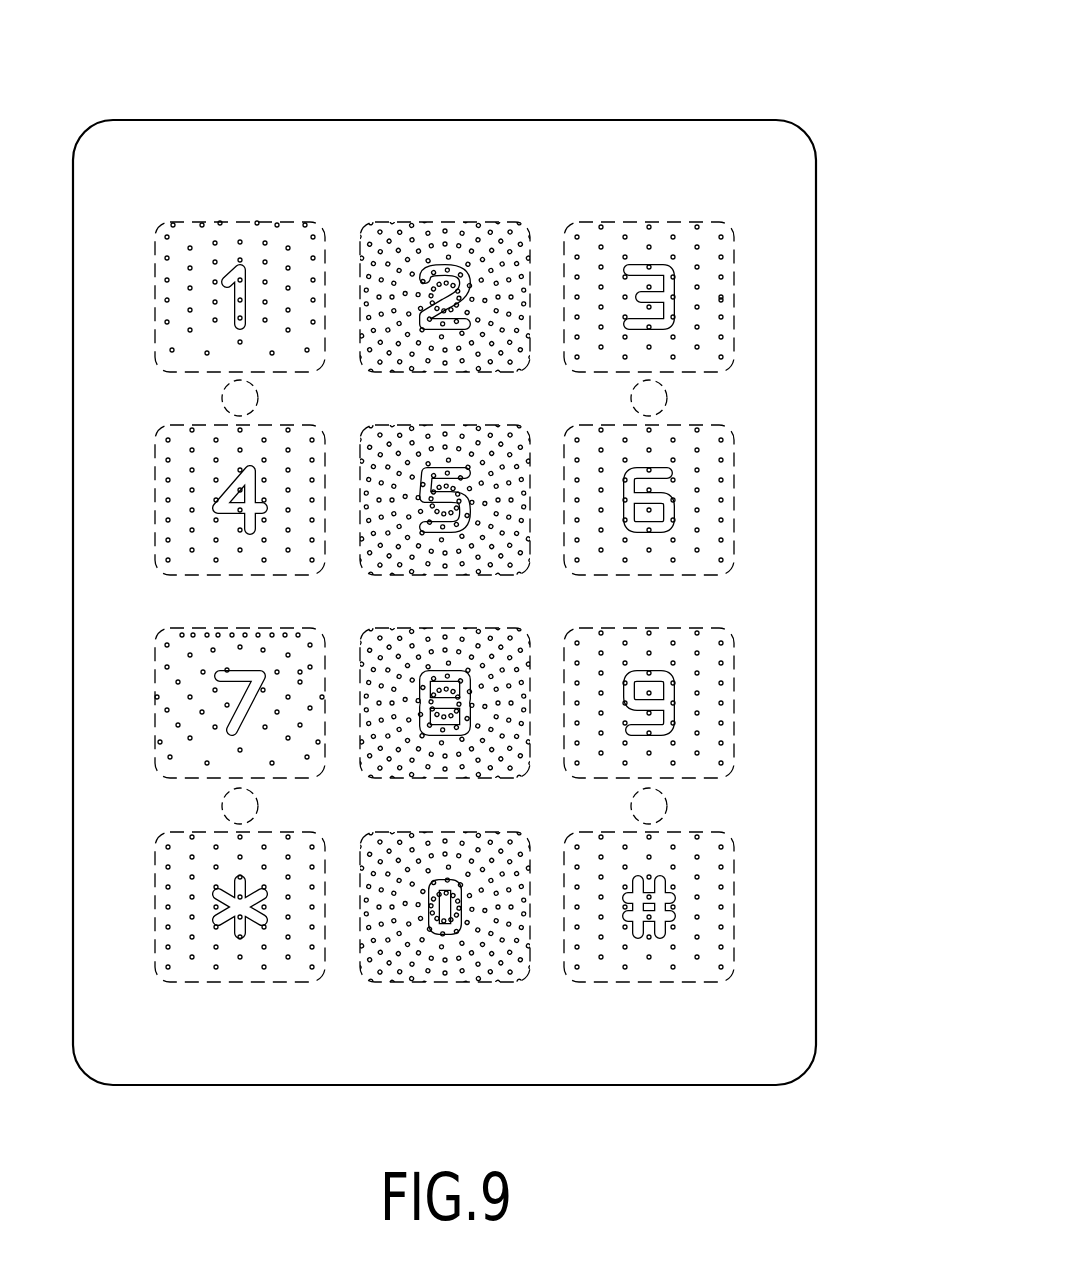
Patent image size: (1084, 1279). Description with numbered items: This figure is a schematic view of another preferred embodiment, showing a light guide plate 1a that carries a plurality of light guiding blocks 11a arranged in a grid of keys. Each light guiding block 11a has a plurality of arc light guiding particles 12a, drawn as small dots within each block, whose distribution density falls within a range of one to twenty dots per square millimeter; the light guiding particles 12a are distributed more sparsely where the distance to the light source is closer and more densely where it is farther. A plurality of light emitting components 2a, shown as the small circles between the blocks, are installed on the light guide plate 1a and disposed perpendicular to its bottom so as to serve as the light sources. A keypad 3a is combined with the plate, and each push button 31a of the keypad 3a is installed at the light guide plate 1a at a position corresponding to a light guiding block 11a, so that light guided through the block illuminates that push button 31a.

The light guide plate 1a is at (428, 130).
The light emitting component 2a is at (668, 396).
The keypad 3a is at (447, 200).
The light guiding block 11a is at (649, 200).
The light guiding particle 12a is at (721, 300).
The push button 31a is at (725, 267).